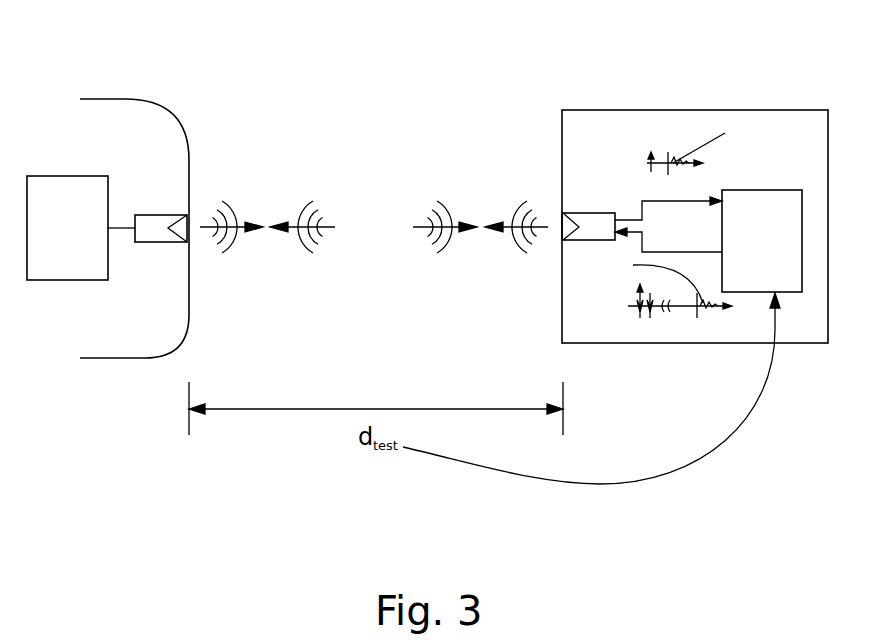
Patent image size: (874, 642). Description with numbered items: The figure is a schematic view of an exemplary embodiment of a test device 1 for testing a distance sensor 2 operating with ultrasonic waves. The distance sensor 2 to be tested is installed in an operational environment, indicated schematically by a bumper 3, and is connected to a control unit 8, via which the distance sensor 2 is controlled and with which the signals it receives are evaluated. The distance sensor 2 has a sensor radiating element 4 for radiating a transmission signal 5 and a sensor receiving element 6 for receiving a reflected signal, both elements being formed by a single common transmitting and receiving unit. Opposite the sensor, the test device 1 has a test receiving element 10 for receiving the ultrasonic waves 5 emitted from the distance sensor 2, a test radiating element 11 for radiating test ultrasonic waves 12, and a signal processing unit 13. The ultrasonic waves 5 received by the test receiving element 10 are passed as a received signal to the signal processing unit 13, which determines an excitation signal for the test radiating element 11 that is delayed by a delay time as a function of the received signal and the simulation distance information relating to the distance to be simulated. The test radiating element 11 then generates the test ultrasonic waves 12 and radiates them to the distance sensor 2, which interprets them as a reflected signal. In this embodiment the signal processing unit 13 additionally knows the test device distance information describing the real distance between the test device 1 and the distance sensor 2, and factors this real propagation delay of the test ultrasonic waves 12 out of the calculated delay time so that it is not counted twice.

The test device 1 is at (688, 73).
The distance sensor 2 is at (161, 228).
The bumper 3 is at (130, 99).
The sensor radiating element 4 is at (199, 137).
The sensor receiving element 6 is at (189, 216).
The transmission signal 5 is at (233, 205).
The control unit 8 is at (67, 228).
The test receiving element 10 is at (588, 135).
The test radiating element 11 is at (592, 222).
The test ultrasonic waves 12 is at (310, 202).
The signal processing unit 13 is at (783, 205).